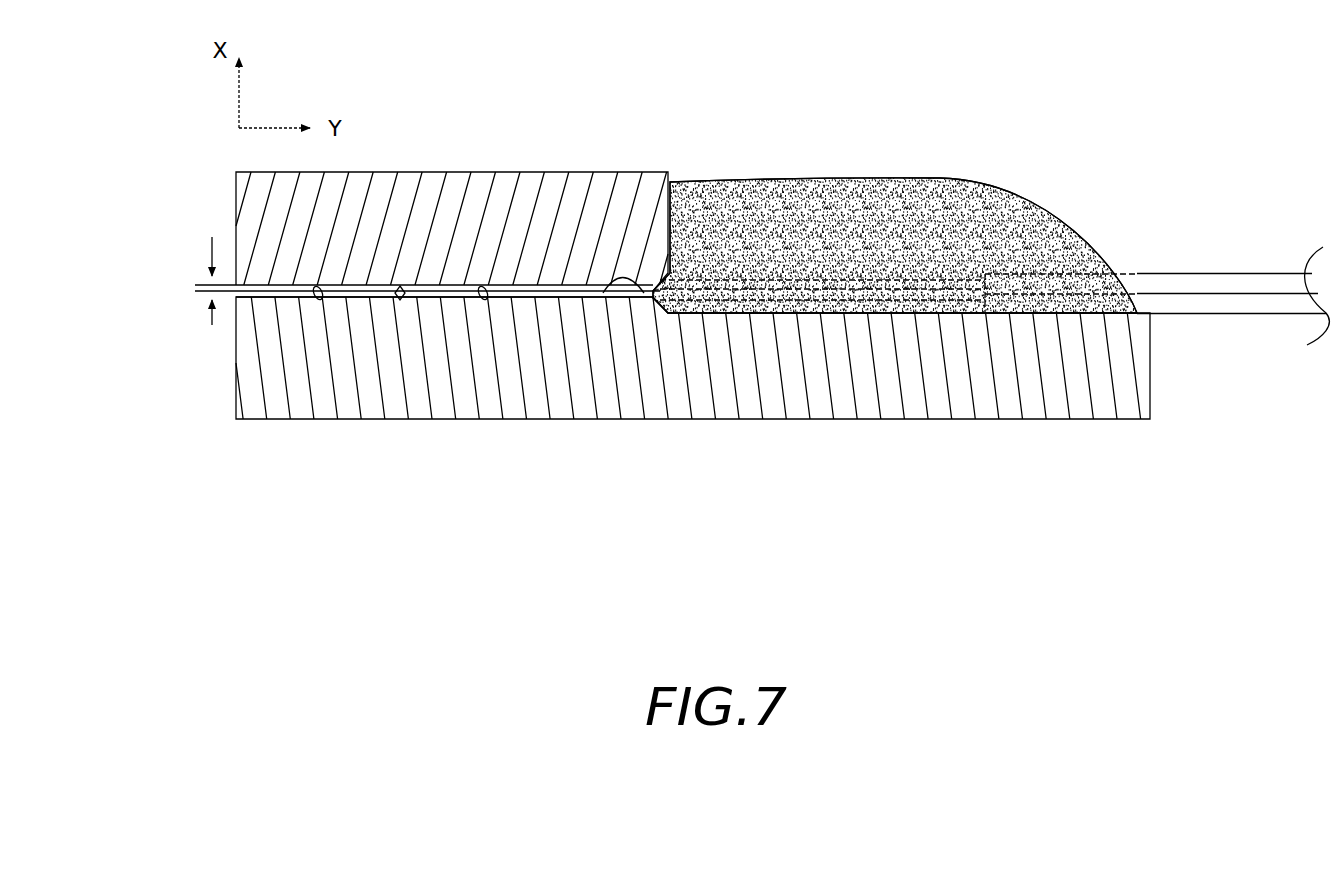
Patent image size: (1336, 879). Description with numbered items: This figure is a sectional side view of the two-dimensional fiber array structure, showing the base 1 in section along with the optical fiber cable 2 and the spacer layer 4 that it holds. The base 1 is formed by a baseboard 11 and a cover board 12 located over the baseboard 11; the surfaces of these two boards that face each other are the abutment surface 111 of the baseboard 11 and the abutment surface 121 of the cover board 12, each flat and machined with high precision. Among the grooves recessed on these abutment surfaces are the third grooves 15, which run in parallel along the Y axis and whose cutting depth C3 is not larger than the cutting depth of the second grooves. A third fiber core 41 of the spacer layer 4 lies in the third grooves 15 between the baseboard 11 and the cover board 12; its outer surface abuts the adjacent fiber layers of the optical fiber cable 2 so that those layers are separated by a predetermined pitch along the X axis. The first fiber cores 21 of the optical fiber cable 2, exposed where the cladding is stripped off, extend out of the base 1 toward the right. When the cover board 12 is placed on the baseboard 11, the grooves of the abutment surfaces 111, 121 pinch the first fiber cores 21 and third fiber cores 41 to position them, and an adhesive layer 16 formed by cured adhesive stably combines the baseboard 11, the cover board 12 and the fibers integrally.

The base 1 is at (638, 350).
The baseboard 11 is at (656, 386).
The abutment surface 111 is at (604, 292).
The cover board 12 is at (262, 258).
The abutment surface 121 is at (276, 294).
The third groove 15 is at (322, 298).
The adhesive layer 16 is at (316, 297).
The optical fiber cable 2 is at (895, 159).
The first fiber core 21 is at (836, 282).
The spacer layer 4 is at (870, 175).
The third fiber core 41 is at (483, 290).
The cutting depth C3 is at (212, 266).